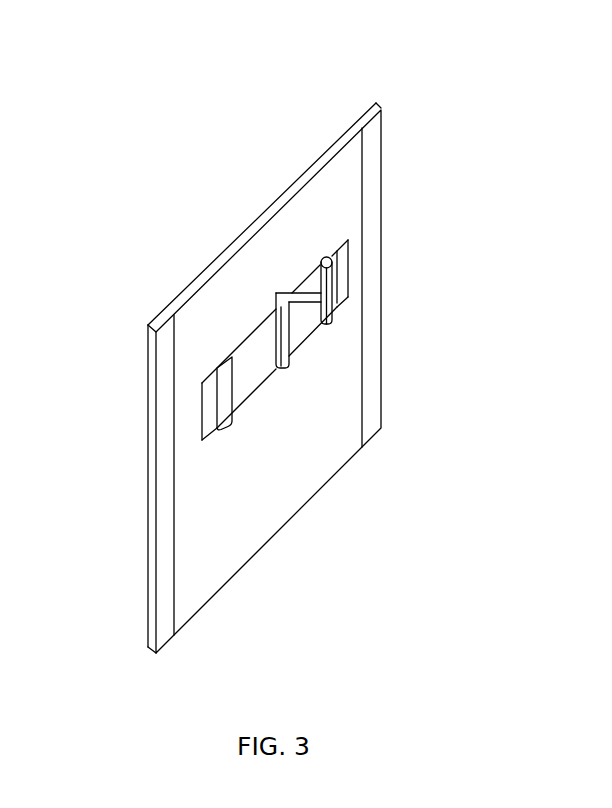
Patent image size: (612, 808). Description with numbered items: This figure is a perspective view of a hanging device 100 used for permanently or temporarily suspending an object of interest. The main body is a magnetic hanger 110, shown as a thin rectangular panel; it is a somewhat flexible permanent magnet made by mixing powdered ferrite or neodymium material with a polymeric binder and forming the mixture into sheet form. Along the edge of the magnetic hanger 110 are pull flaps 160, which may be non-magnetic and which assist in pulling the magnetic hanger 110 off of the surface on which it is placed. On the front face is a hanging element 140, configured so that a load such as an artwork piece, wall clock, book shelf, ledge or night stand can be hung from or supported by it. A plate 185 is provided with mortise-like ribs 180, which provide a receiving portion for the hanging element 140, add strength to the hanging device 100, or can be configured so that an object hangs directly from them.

The hanging device 100 is at (176, 181).
The magnetic hanger 110 is at (268, 503).
The pull flaps 160 is at (163, 585).
The hanging element 140 is at (313, 293).
The plate 185 is at (262, 349).
The mortise-like ribs 180 is at (222, 398).